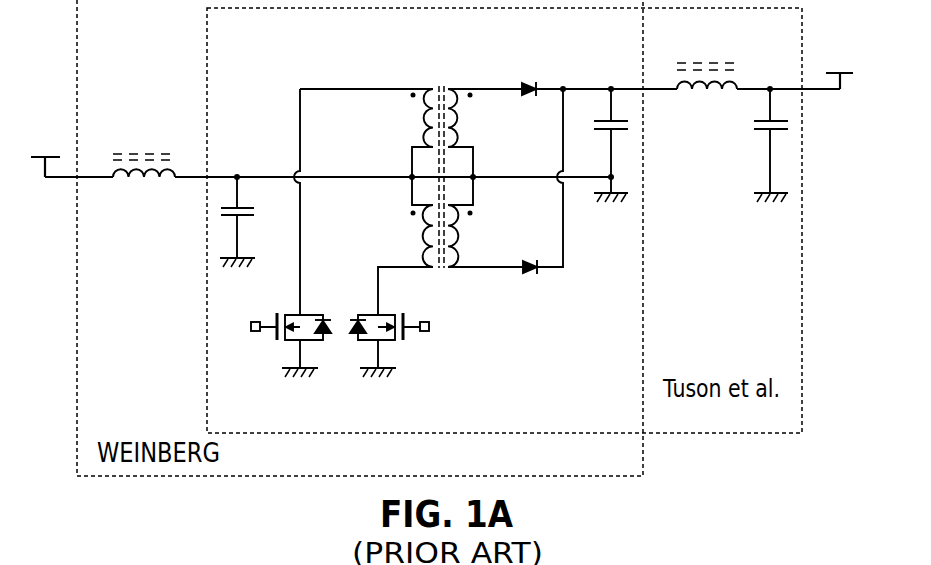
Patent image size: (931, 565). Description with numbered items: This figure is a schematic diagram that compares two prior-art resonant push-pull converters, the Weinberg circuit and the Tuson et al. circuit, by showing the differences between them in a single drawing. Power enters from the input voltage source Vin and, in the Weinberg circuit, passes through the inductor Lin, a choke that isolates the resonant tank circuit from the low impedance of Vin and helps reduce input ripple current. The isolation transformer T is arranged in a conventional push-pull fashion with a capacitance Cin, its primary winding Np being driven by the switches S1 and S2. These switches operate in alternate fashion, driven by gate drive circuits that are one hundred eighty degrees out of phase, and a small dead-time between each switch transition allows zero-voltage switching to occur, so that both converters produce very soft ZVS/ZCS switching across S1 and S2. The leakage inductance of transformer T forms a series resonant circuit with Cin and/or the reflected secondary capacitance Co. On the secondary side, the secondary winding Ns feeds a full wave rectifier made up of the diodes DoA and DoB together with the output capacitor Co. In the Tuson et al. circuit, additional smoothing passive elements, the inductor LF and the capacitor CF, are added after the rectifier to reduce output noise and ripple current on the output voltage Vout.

The input voltage source Vin is at (45, 150).
The output voltage Vout is at (840, 67).
The inductor (choke) Lin is at (144, 147).
The smoothing inductor LF is at (707, 59).
The capacitance Cin is at (257, 222).
The output capacitor Co is at (600, 145).
The smoothing capacitor CF is at (759, 145).
The isolation transformer T is at (443, 159).
The primary winding Np is at (401, 202).
The secondary winding Ns is at (485, 178).
The diode DoA is at (525, 72).
The diode DoB is at (526, 284).
The switch S1 is at (389, 330).
The switch S2 is at (291, 330).